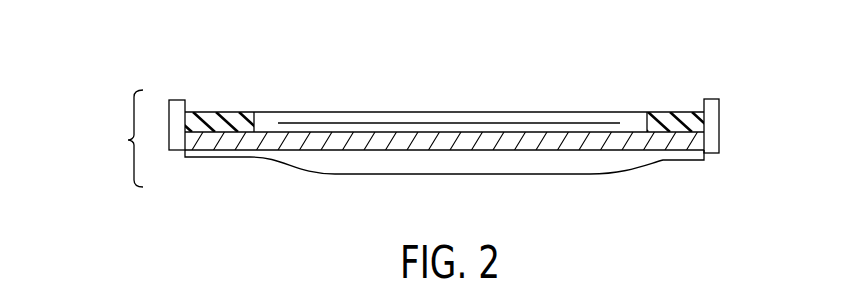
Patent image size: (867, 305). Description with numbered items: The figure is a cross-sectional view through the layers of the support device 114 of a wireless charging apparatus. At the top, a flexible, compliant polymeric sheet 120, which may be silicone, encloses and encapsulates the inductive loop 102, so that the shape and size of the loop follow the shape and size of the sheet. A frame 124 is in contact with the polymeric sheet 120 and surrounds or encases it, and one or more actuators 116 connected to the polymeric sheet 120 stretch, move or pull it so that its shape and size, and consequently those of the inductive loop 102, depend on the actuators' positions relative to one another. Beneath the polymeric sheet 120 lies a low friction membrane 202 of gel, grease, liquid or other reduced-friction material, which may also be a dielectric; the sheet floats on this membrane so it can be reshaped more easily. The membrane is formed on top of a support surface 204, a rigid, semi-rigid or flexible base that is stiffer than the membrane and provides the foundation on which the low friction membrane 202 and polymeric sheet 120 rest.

The support device 114 is at (121, 138).
The actuators 116 is at (177, 108).
The inductive loop 102 is at (373, 122).
The polymeric sheet 120 is at (517, 112).
The frame 124 is at (685, 122).
The low friction membrane 202 is at (668, 142).
The support surface 204 is at (470, 162).